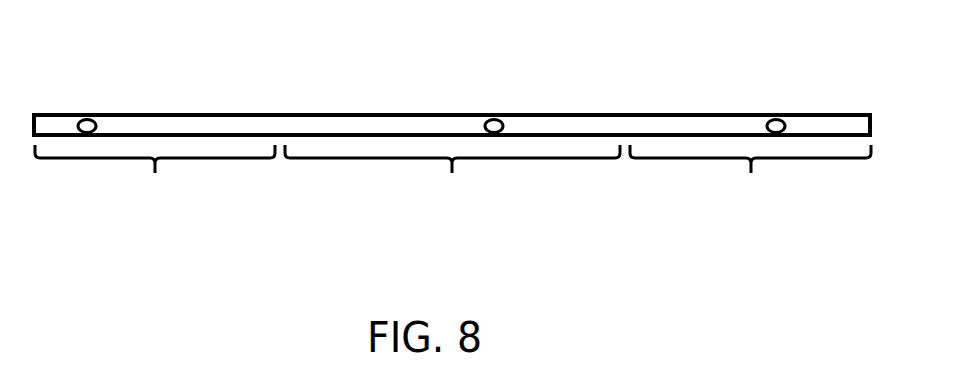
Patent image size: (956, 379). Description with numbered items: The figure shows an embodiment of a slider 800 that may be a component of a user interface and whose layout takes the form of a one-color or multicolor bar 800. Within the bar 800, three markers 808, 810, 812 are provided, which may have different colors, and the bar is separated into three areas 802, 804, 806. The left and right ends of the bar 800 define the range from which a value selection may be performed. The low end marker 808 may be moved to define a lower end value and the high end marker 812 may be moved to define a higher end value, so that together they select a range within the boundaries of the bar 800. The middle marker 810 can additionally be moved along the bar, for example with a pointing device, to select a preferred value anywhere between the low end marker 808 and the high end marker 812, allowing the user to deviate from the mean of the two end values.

The slider 800 is at (307, 111).
The first area 802 is at (155, 179).
The second area 804 is at (452, 179).
The third area 806 is at (750, 184).
The low end marker 808 is at (88, 110).
The middle marker 810 is at (496, 110).
The high end marker 812 is at (777, 110).